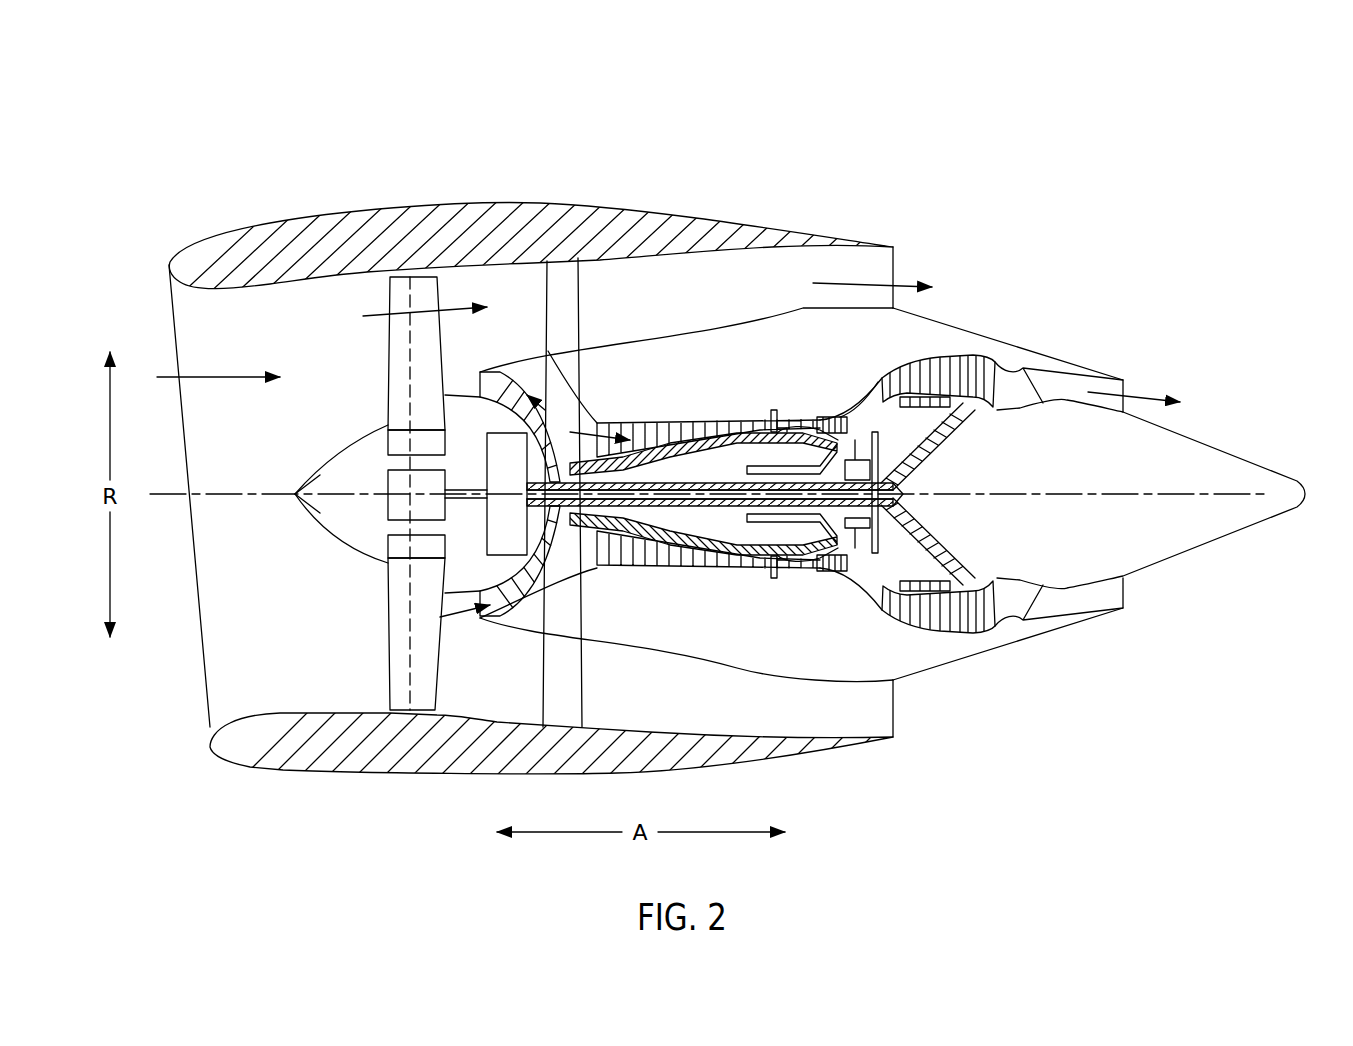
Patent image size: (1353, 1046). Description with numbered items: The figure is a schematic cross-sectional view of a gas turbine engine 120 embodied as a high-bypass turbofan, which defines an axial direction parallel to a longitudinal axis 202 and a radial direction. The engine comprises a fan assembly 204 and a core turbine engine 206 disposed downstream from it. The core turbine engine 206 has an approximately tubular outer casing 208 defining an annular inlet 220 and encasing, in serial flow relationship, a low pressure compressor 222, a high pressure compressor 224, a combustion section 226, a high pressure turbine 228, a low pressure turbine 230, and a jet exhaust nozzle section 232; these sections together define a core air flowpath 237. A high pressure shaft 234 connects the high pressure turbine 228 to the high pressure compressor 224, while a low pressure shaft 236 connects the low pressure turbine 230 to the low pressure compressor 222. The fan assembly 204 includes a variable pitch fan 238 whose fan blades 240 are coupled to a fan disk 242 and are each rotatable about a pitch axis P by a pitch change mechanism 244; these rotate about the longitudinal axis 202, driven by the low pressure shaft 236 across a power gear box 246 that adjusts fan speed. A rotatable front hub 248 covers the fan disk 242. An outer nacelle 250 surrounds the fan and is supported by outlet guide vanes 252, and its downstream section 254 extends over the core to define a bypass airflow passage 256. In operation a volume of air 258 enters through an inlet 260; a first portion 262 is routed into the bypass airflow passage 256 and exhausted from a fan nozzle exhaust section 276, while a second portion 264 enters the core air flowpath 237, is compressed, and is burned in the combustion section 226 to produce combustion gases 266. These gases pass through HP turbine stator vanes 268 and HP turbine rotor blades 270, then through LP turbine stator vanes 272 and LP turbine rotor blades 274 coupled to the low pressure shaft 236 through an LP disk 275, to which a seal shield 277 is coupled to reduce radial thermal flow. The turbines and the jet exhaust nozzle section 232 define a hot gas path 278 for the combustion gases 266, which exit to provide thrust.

The gas turbine engine 120 is at (1033, 240).
The longitudinal axis 202 is at (1077, 492).
The fan assembly 204 is at (302, 308).
The core turbine engine 206 is at (688, 380).
The outer casing 208 is at (744, 676).
The annular inlet 220 is at (440, 617).
The low pressure compressor 222 is at (530, 580).
The high pressure compressor 224 is at (617, 566).
The combustion section 226 is at (793, 572).
The high pressure turbine 228 is at (856, 568).
The low pressure turbine 230 is at (978, 624).
The jet exhaust nozzle section 232 is at (1040, 607).
The high pressure shaft 234 is at (773, 470).
The low pressure shaft 236 is at (687, 460).
The core air flowpath 237 is at (560, 578).
The variable pitch fan 238 is at (343, 541).
The fan blades 240 is at (388, 657).
The fan disk 242 is at (400, 445).
The pitch change mechanism 244 is at (388, 478).
The power gear box 246 is at (508, 443).
The front hub 248 is at (305, 508).
The outer nacelle 250 is at (443, 778).
The outlet guide vanes 252 is at (583, 308).
The downstream section 254 is at (790, 236).
The bypass airflow passage 256 is at (695, 296).
The volume of air 258 is at (197, 382).
The inlet 260 is at (206, 724).
The first portion 262 is at (397, 312).
The second portion 264 is at (478, 374).
The combustion gases 266 is at (903, 383).
The HP turbine stator vanes 268 is at (808, 572).
The HP turbine rotor blades 270 is at (825, 545).
The LP turbine stator vanes 272 is at (893, 622).
The LP turbine rotor blades 274 is at (907, 641).
The LP disk 275 is at (881, 458).
The fan nozzle exhaust section 276 is at (882, 268).
The seal shield 277 is at (877, 400).
The hot gas path 278 is at (878, 370).
The pitch axis P is at (415, 290).